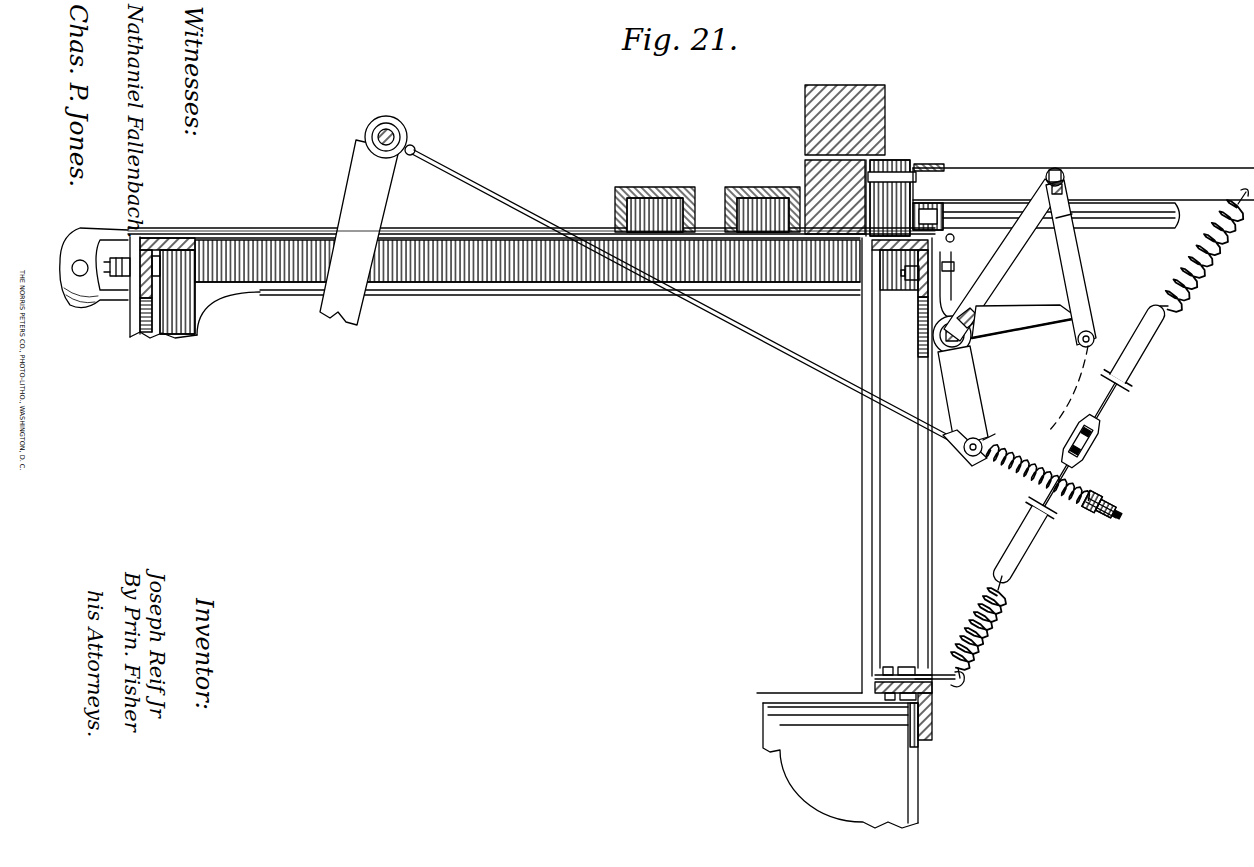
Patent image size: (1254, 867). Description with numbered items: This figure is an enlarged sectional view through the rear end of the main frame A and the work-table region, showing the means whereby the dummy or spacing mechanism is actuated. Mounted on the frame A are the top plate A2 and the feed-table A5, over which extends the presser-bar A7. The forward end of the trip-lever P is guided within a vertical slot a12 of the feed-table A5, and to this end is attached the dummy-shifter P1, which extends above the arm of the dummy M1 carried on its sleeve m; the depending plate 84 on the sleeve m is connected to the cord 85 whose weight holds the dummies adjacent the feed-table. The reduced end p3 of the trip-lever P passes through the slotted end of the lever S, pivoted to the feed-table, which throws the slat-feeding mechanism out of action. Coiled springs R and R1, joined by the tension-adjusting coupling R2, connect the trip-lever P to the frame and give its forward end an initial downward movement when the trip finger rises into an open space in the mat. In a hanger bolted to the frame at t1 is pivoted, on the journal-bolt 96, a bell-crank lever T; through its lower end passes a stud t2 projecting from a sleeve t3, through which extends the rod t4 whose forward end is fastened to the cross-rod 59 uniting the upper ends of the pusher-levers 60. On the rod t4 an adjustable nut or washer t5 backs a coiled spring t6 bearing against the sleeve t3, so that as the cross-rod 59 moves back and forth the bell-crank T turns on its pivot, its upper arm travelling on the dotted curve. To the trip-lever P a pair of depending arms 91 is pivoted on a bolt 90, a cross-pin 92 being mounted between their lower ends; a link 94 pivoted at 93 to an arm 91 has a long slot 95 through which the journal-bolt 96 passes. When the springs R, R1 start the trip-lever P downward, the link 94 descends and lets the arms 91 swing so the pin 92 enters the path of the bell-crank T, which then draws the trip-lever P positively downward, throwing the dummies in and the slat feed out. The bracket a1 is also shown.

The frame A is at (861, 556).
The frame bracket a1 is at (934, 705).
The top plate A2 is at (669, 190).
The feed-table A5 is at (812, 170).
The presser-bar A7 is at (876, 103).
The vertical slot a12 is at (890, 165).
The reduced end p3 is at (937, 168).
The lever S is at (945, 160).
The dummy-shifter P1 is at (937, 212).
The dummy M1 is at (985, 212).
The sleeve m is at (1000, 205).
The trip-lever P is at (1083, 187).
The cross-rod 59 is at (390, 132).
The pusher-lever 60 is at (359, 232).
The cord 85 is at (303, 240).
The rod t4 is at (1138, 500).
The bolting point t1 is at (913, 284).
The journal-bolt 96 is at (944, 345).
The depending arm or plate 84 is at (940, 300).
The link 94 is at (1005, 262).
The long slot 95 is at (990, 306).
The depending arm 91 is at (1080, 248).
The pivot 93 is at (1056, 170).
The bolt 90 is at (1066, 182).
The cross-pin 92 is at (1092, 336).
The bell-crank lever T is at (973, 380).
The sleeve t3 is at (957, 460).
The stud t2 is at (984, 450).
The coiled spring t6 is at (1020, 470).
The adjustable nut or washer t5 is at (1098, 498).
The coupling R2 is at (1100, 446).
The coiled spring R is at (1000, 612).
The coiled spring R1 is at (1203, 262).